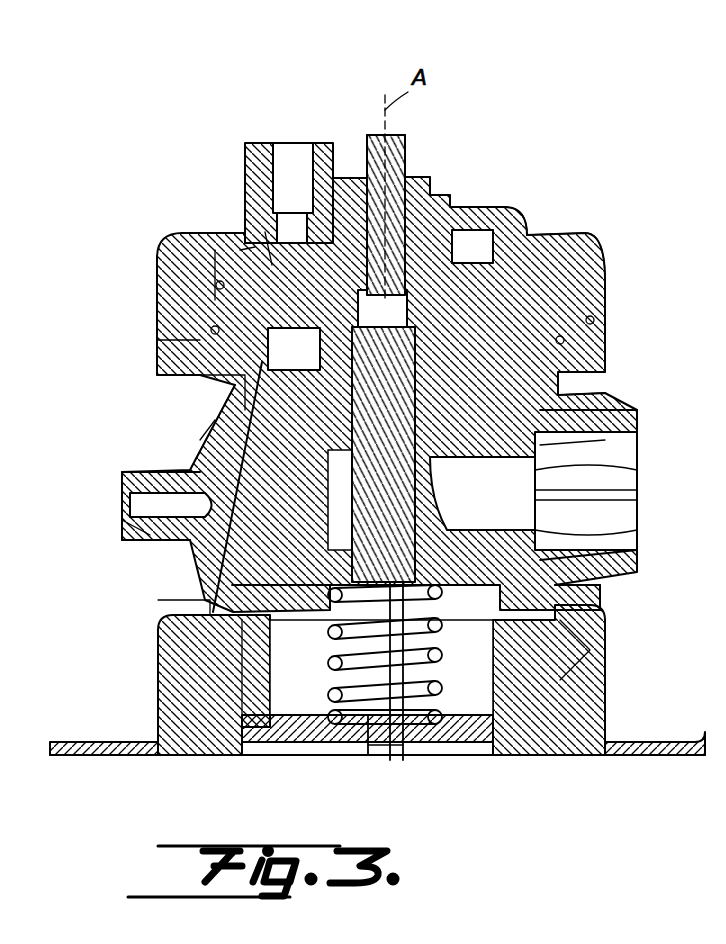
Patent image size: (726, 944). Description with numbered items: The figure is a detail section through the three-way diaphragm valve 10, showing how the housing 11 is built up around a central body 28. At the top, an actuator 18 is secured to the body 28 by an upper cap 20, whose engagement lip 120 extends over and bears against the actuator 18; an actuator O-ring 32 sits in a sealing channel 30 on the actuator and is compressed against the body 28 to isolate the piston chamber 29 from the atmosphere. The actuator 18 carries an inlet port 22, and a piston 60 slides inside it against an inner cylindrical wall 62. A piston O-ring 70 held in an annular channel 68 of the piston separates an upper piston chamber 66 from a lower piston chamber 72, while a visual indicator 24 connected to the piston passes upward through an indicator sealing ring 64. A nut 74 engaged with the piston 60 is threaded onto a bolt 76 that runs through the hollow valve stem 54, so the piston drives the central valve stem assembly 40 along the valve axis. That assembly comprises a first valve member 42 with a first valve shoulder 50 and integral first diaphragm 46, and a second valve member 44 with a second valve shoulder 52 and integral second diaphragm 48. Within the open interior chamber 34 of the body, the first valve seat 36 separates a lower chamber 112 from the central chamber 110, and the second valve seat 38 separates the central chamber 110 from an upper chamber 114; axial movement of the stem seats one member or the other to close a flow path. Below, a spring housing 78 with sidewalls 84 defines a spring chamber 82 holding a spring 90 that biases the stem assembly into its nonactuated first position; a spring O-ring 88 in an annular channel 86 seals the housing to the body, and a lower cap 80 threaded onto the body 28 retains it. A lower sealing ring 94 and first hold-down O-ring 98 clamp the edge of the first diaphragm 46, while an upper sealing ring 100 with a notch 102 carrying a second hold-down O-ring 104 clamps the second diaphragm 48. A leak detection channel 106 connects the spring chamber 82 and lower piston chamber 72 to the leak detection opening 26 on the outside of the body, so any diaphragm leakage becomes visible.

The valve 10 is at (250, 585).
The housing 11 is at (225, 410).
The actuator 18 is at (515, 240).
The upper cap 20 is at (605, 283).
The inlet port 22 is at (290, 165).
The visual indicator 24 is at (405, 148).
The leak detection opening 26 is at (125, 490).
The body 28 is at (620, 405).
The piston chamber 29 is at (500, 250).
The sealing channel 30 is at (195, 235).
The actuator O-ring 32 is at (180, 285).
The open interior chamber 34 is at (500, 520).
The first valve seat 36 is at (600, 520).
The second valve seat 38 is at (600, 470).
The central valve stem assembly 40 is at (150, 503).
The first valve member 42 is at (600, 575).
The second valve member 44 is at (605, 445).
The first diaphragm 46 is at (322, 600).
The second diaphragm 48 is at (595, 318).
The first valve shoulder 50 is at (135, 535).
The second valve shoulder 52 is at (185, 345).
The hollow valve stem 54 is at (200, 460).
The piston 60 is at (475, 255).
The inner cylindrical wall 62 is at (192, 236).
The indicator sealing ring 64 is at (440, 250).
The upper piston chamber 66 is at (350, 200).
The annular channel 68 is at (245, 235).
The piston O-ring 70 is at (225, 240).
The lower piston chamber 72 is at (215, 245).
The nut 74 is at (580, 235).
The bolt 76 is at (348, 600).
The spring housing 78 is at (212, 692).
The lower cap 80 is at (605, 692).
The spring chamber 82 is at (310, 682).
The sidewalls 84 is at (470, 742).
The annular channel 86 is at (580, 650).
The spring O-ring 88 is at (160, 617).
The spring 90 is at (500, 760).
The lower sealing ring 94 is at (402, 600).
The first hold-down O-ring 98 is at (600, 612).
The upper sealing ring 100 is at (590, 372).
The notch 102 is at (190, 330).
The second hold-down O-ring 104 is at (600, 392).
The leak detection channel 106 is at (180, 470).
The central chamber 110 is at (600, 492).
The lower chamber 112 is at (200, 603).
The upper chamber 114 is at (175, 378).
The engagement lip 120 is at (600, 262).